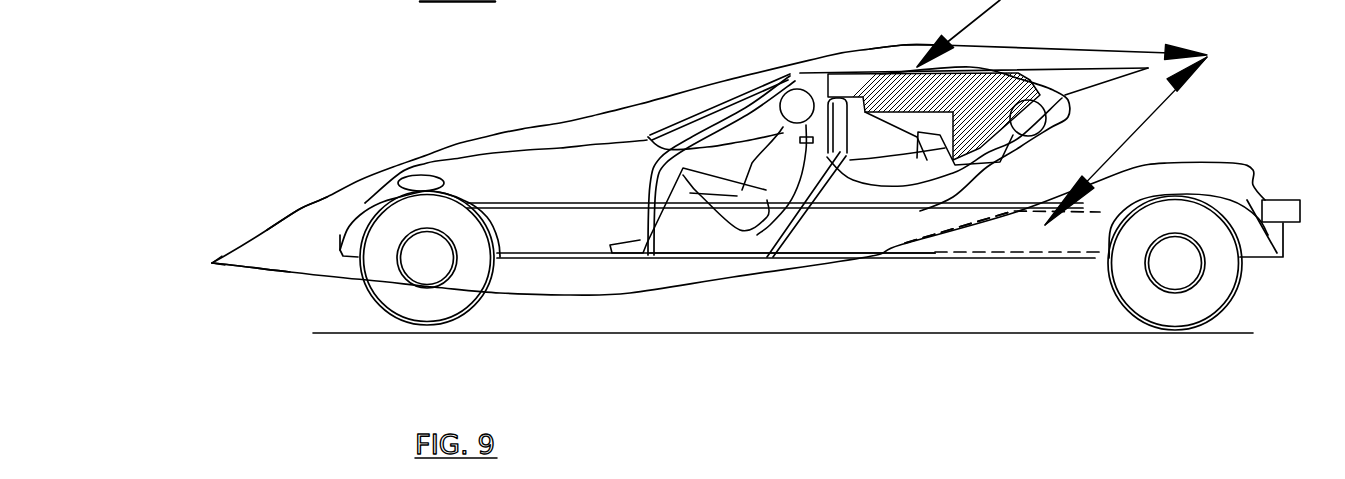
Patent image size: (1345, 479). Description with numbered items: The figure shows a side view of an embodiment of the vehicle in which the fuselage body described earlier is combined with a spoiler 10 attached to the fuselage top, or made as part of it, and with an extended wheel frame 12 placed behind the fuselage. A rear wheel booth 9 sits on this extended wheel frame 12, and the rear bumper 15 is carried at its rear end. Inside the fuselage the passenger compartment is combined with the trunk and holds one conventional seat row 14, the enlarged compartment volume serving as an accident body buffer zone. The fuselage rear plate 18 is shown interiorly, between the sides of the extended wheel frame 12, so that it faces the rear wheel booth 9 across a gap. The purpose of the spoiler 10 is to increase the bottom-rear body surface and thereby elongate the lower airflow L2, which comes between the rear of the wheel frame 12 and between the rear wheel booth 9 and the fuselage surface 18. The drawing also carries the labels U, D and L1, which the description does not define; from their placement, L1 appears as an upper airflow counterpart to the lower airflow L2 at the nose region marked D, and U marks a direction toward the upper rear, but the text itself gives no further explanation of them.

The rear wheel booth 9 is at (1053, 268).
The spoiler 10 is at (1080, 37).
The extended wheel frame 12 is at (1088, 182).
The conventional seat rows 14 is at (747, 305).
The rear bumper 15 is at (1300, 157).
The fuselage rear plate 18 is at (923, 288).
The upward direction U is at (1099, 132).
The nose point D is at (209, 267).
The upper body line L1 is at (220, 200).
The lower airflow L2 is at (235, 293).